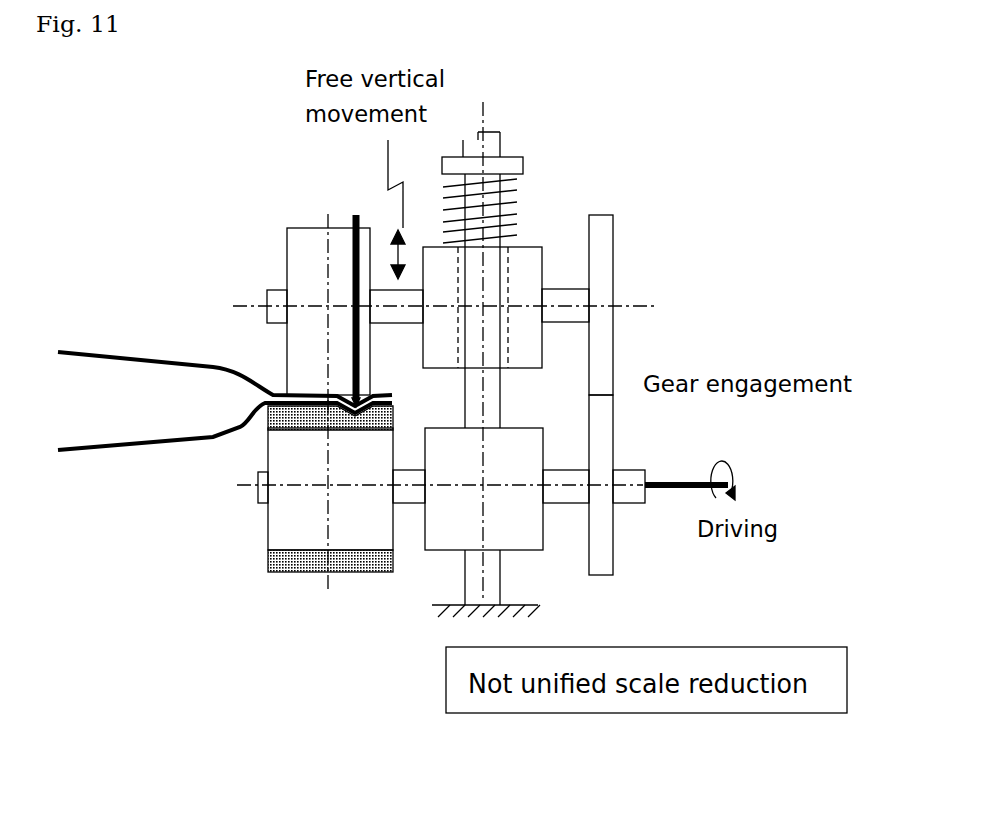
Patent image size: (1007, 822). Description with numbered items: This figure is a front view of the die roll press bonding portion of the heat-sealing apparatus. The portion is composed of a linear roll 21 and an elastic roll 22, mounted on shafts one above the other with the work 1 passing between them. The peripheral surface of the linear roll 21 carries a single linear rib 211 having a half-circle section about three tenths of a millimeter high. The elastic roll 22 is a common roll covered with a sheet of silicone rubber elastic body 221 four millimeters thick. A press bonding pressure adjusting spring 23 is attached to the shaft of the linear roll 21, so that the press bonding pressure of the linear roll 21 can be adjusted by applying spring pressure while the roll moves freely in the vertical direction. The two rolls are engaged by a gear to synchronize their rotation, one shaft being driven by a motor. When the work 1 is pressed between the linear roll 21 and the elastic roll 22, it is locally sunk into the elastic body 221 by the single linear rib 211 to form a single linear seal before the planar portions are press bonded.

The work 1 is at (168, 358).
The linear roll 21 is at (293, 262).
The single linear rib 211 is at (353, 213).
The elastic roll 22 is at (275, 538).
The elastic body 221 is at (280, 560).
The press bonding pressure adjusting spring 23 is at (523, 187).